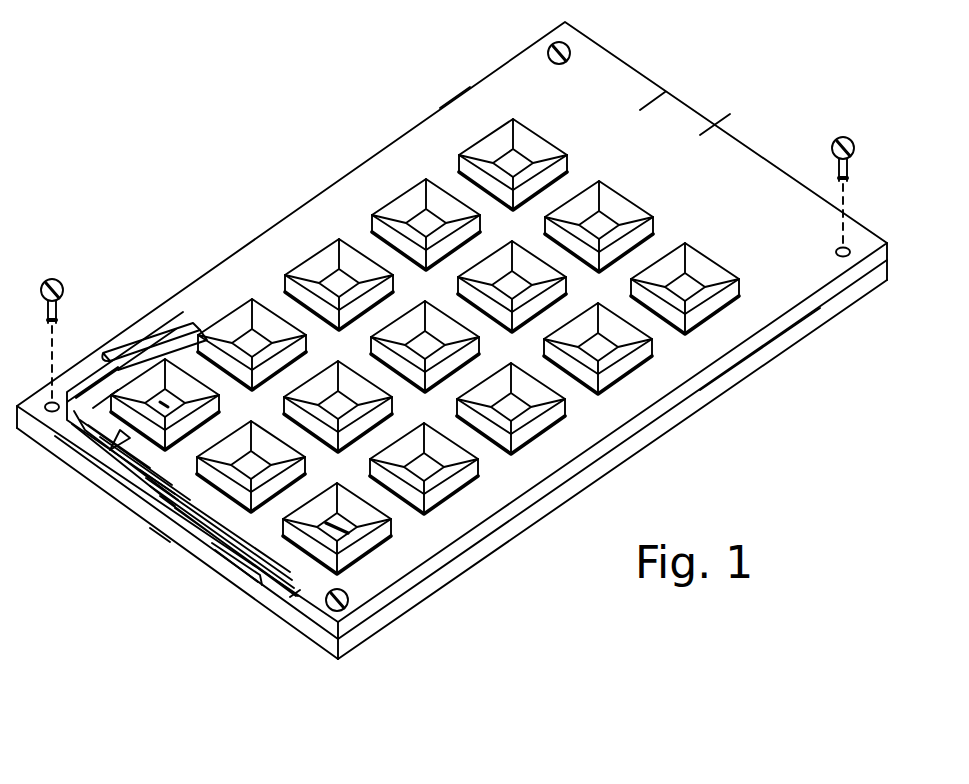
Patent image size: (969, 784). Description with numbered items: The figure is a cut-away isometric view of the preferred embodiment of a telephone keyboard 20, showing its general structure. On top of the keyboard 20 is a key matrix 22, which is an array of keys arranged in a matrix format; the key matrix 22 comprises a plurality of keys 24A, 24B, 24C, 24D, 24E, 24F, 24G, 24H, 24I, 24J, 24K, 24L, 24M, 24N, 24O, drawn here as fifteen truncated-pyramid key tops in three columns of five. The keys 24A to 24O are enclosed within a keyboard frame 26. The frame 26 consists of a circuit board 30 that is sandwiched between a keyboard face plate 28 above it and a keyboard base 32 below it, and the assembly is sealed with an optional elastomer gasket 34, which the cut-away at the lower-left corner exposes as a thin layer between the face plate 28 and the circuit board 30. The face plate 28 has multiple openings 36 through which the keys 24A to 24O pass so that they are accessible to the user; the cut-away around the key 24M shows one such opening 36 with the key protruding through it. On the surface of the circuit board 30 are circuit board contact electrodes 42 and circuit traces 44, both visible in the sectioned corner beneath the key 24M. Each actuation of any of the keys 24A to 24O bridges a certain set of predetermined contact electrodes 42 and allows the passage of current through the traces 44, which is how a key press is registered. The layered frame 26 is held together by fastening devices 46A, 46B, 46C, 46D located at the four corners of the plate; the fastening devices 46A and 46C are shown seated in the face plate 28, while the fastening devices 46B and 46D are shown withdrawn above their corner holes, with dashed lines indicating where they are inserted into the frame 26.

The keyboard 20 is at (262, 224).
The key matrix 22 is at (458, 84).
The key 24A is at (497, 126).
The key 24B is at (584, 193).
The key 24C is at (672, 250).
The key 24D is at (408, 181).
The key 24E is at (488, 255).
The key 24F is at (655, 343).
The key 24G is at (312, 244).
The key 24H is at (405, 318).
The key 24I is at (567, 403).
The key 24J is at (236, 304).
The key 24K is at (326, 371).
The key 24L is at (480, 463).
The key 24M is at (162, 358).
The key 24N is at (275, 429).
The key 24O is at (395, 523).
The keyboard frame 26 is at (716, 124).
The keyboard face plate 28 is at (653, 100).
The circuit board 30 is at (78, 398).
The keyboard base 32 is at (790, 340).
The elastomer gasket 34 is at (107, 350).
The openings in keyboard face plate 36 is at (290, 490).
The circuit board contact electrode 42 is at (121, 440).
The circuit traces 44 is at (88, 421).
The fastening device 46A is at (571, 48).
The fastening device 46B is at (840, 137).
The fastening device 46C is at (350, 604).
The fastening device 46D is at (48, 283).